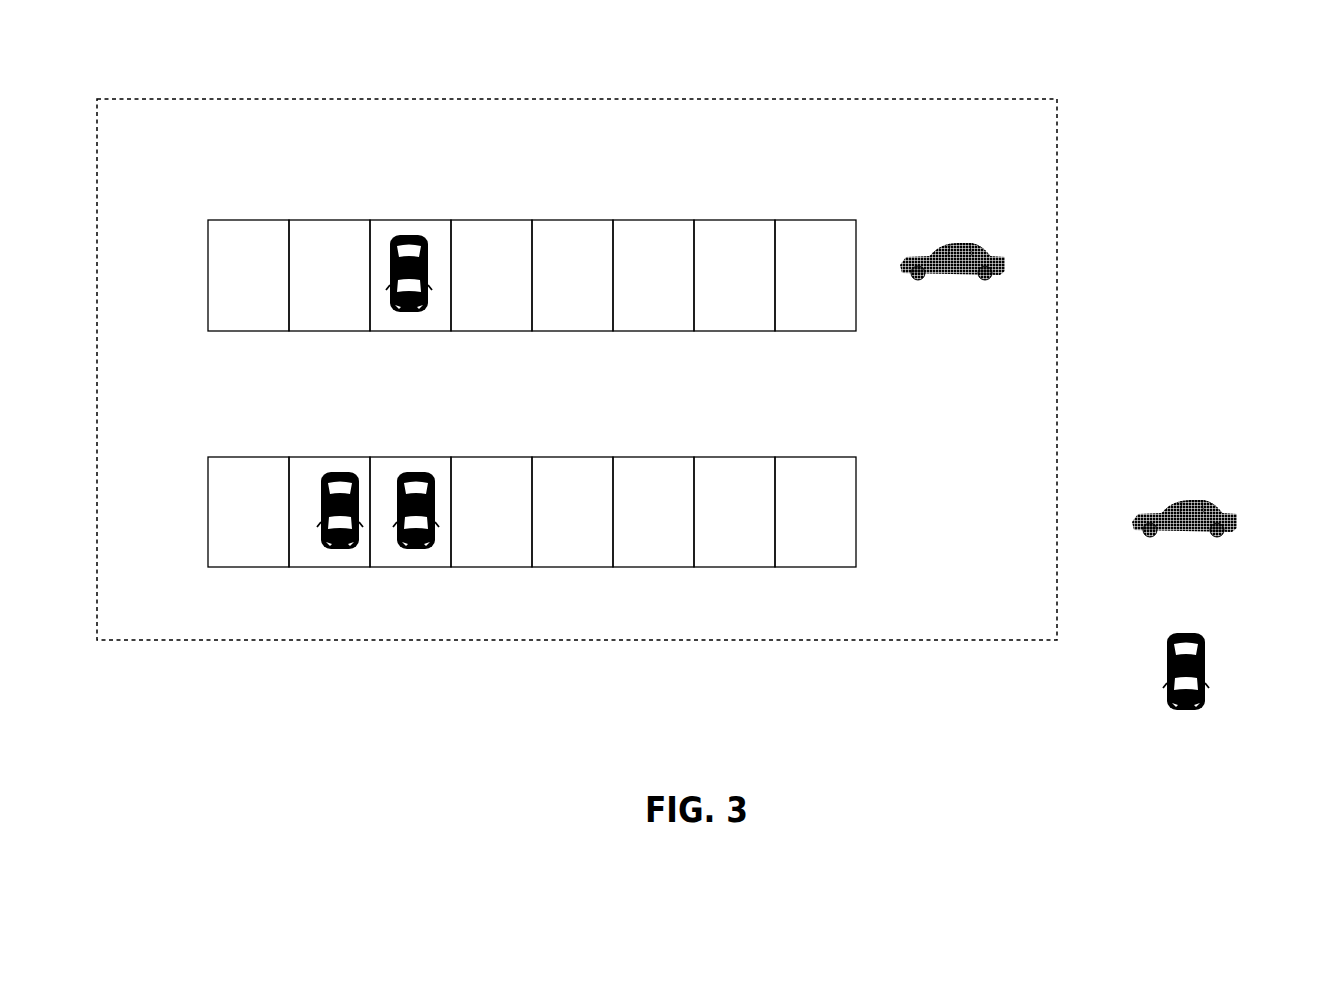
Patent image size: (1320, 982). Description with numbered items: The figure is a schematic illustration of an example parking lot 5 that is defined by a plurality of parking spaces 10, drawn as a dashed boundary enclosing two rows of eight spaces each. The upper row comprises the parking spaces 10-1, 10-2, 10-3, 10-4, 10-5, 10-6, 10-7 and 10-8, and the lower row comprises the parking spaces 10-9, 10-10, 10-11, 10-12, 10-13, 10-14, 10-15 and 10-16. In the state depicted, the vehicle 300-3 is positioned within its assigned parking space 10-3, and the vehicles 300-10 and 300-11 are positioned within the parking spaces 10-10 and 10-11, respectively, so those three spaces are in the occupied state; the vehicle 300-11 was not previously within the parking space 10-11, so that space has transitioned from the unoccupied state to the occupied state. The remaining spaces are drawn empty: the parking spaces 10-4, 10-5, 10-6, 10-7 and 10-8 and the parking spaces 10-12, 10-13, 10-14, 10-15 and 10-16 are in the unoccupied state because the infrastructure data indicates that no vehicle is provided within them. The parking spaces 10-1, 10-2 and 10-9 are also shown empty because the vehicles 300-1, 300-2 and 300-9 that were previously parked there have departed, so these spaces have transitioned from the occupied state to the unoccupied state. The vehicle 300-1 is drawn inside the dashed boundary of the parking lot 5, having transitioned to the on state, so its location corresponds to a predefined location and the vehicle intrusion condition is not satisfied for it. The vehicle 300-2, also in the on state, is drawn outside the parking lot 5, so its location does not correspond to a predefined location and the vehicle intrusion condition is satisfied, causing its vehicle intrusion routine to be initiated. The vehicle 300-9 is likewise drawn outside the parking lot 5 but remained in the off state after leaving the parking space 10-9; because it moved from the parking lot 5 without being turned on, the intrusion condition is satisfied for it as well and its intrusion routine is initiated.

The parking lot 5 is at (1012, 99).
The parking spaces 10 is at (598, 352).
The parking space 10-1 is at (271, 255).
The parking space 10-2 is at (350, 255).
The parking space 10-3 is at (434, 255).
The parking space 10-4 is at (519, 255).
The parking space 10-5 is at (599, 255).
The parking space 10-6 is at (680, 255).
The parking space 10-7 is at (762, 255).
The parking space 10-8 is at (846, 255).
The parking space 10-9 is at (271, 490).
The parking space 10-10 is at (353, 490).
The parking space 10-11 is at (437, 490).
The parking space 10-12 is at (521, 490).
The parking space 10-13 is at (600, 490).
The parking space 10-14 is at (682, 490).
The parking space 10-15 is at (764, 490).
The parking space 10-16 is at (849, 490).
The vehicle 300-1 is at (972, 258).
The vehicle 300-2 is at (1218, 513).
The vehicle 300-3 is at (392, 297).
The vehicle 300-9 is at (1168, 670).
The vehicle 300-10 is at (322, 507).
The vehicle 300-11 is at (398, 508).